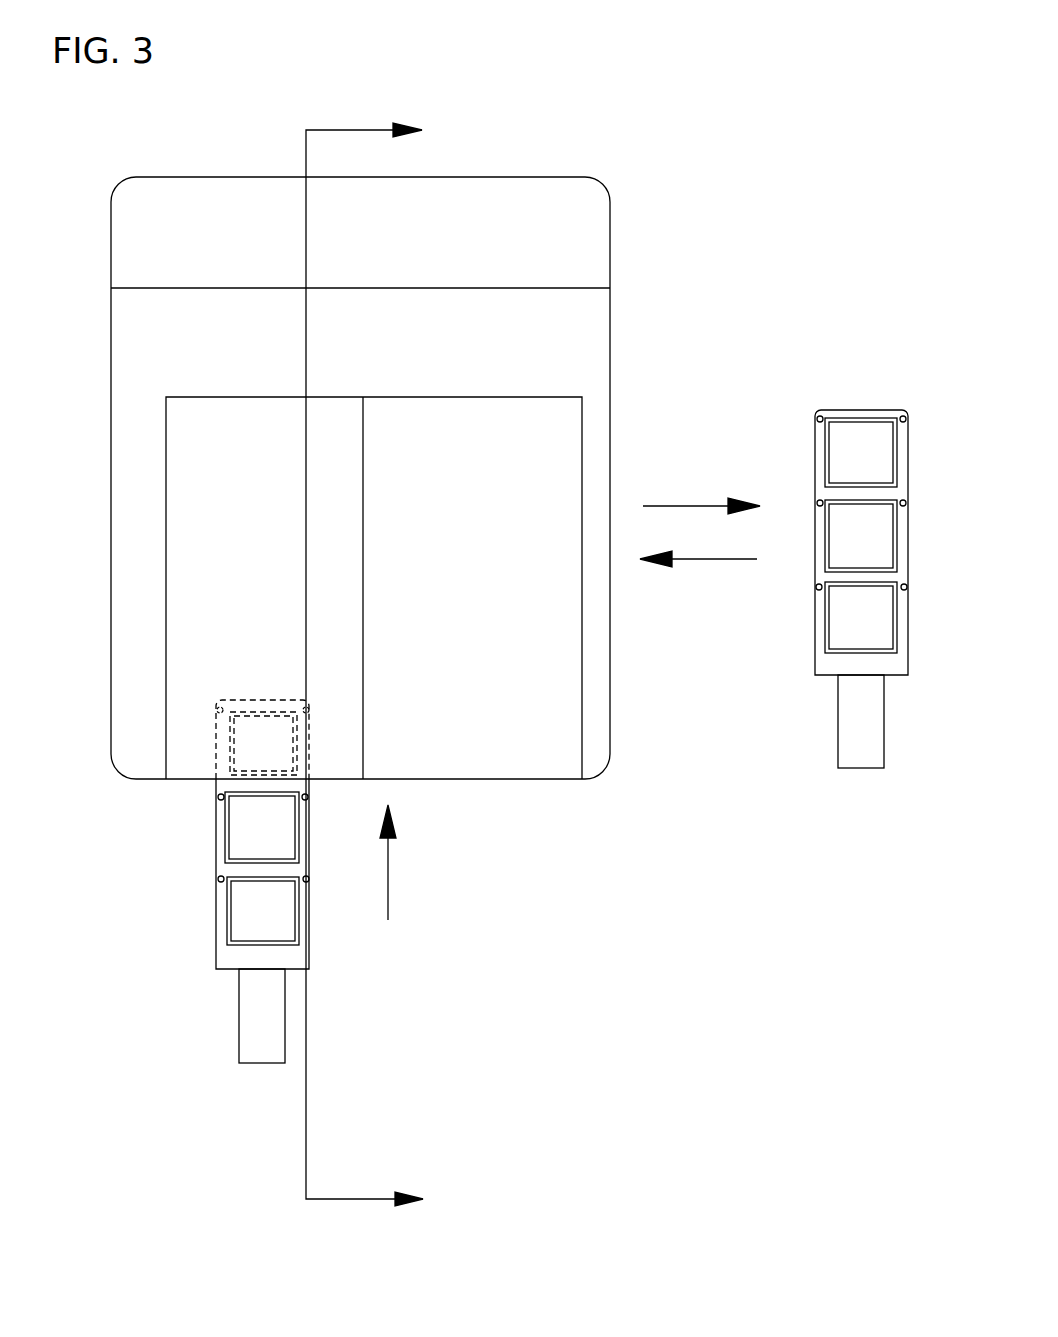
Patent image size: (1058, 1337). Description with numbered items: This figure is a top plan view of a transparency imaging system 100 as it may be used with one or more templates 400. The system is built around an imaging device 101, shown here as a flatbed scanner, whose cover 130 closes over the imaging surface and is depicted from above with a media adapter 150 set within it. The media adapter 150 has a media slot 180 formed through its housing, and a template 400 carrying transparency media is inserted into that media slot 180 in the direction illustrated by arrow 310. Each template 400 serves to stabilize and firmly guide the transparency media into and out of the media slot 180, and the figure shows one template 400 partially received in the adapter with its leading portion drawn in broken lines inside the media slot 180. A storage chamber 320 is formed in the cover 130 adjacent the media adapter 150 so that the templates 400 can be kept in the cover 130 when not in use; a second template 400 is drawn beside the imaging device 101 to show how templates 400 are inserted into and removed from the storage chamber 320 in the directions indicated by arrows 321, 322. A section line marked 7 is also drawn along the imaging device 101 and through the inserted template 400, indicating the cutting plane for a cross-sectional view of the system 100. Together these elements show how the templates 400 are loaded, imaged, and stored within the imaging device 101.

The transparency imaging system 100 is at (655, 105).
The imaging device 101 is at (177, 173).
The cover 130 is at (163, 287).
The media adapter 150 is at (187, 397).
The section line 7- 7 is at (357, 130).
The media slot 180 is at (200, 790).
The arrow 310 is at (388, 872).
The storage chamber 320 is at (582, 710).
The arrow 321 is at (668, 506).
The arrow 322 is at (688, 560).
The template 400 is at (857, 408).